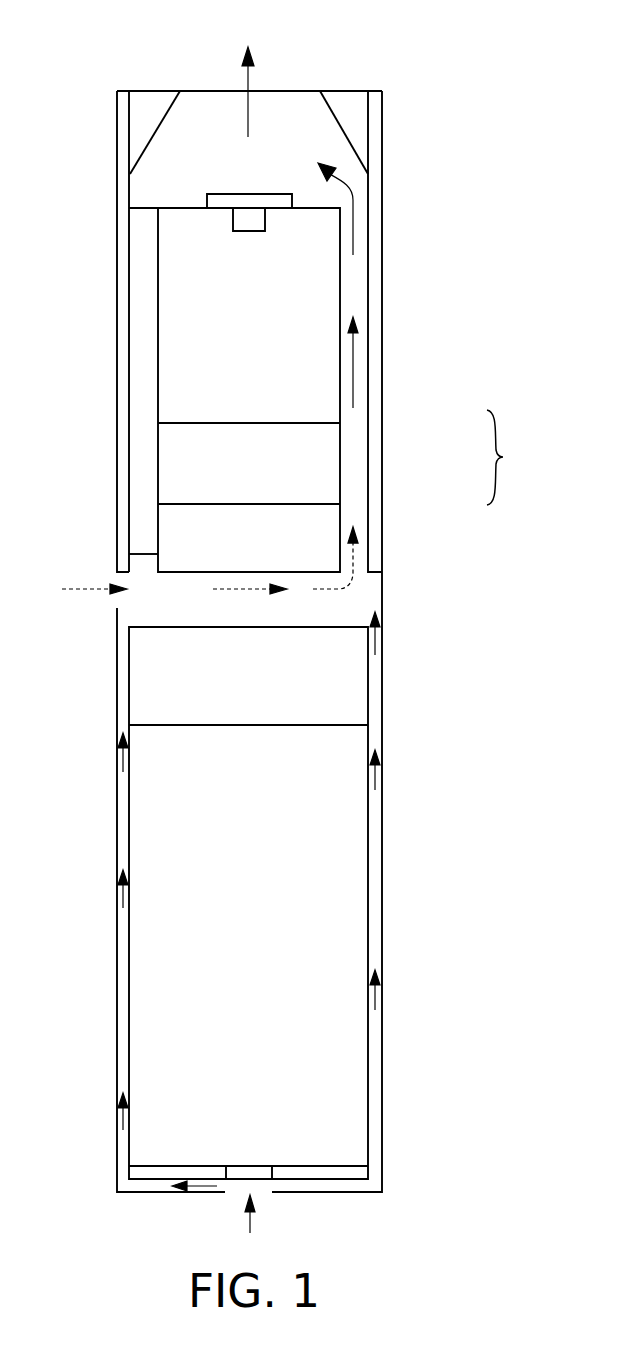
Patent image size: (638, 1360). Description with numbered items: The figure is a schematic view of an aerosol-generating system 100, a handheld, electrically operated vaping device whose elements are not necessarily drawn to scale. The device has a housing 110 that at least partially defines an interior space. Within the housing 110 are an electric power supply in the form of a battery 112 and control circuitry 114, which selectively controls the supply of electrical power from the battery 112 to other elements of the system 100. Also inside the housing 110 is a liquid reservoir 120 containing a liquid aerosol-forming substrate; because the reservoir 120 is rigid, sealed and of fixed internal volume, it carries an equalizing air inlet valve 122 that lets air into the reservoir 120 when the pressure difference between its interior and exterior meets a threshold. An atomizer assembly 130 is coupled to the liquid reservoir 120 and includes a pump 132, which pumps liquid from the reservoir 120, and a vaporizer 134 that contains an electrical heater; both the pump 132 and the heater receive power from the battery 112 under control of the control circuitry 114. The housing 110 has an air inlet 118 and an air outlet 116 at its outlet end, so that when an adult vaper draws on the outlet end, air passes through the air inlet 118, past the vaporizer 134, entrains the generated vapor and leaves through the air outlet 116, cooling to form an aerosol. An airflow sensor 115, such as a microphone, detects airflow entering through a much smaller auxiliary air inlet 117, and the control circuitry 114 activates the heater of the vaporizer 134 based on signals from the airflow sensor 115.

The aerosol-generating system 100 is at (412, 784).
The housing 110 is at (383, 892).
The battery 112 is at (350, 1052).
The control circuitry 114 is at (352, 675).
The airflow sensor 115 is at (248, 1170).
The air outlet 116 is at (281, 68).
The auxiliary air inlet 117 is at (252, 1223).
The air inlet 118 is at (120, 598).
The liquid reservoir 120 is at (330, 298).
The equalizing air inlet valve 122 is at (232, 220).
The atomizer assembly 130 is at (517, 457).
The pump 132 is at (323, 460).
The vaporizer 134 is at (323, 523).